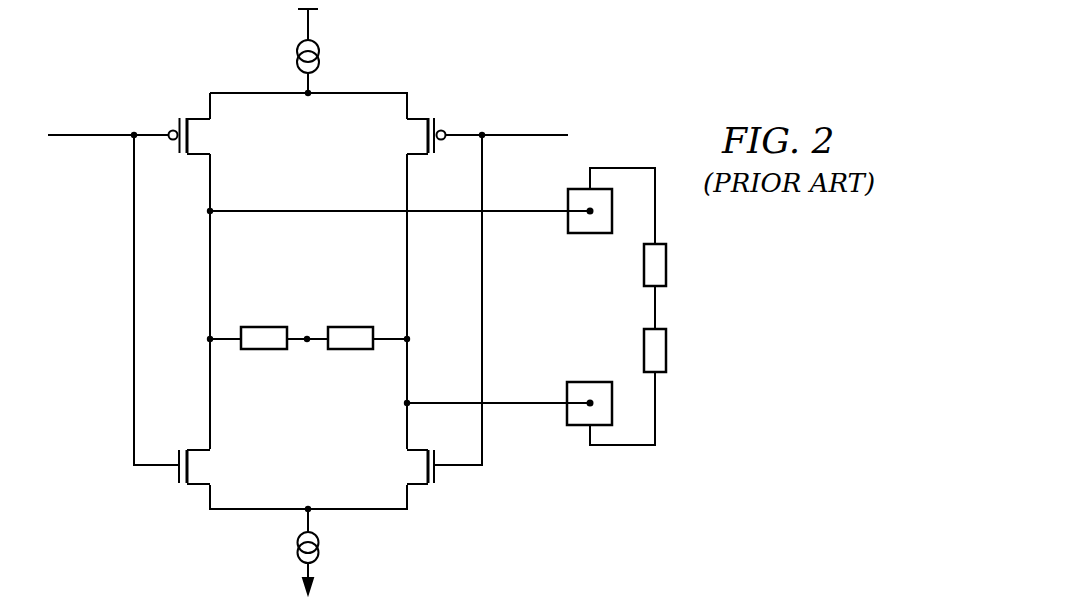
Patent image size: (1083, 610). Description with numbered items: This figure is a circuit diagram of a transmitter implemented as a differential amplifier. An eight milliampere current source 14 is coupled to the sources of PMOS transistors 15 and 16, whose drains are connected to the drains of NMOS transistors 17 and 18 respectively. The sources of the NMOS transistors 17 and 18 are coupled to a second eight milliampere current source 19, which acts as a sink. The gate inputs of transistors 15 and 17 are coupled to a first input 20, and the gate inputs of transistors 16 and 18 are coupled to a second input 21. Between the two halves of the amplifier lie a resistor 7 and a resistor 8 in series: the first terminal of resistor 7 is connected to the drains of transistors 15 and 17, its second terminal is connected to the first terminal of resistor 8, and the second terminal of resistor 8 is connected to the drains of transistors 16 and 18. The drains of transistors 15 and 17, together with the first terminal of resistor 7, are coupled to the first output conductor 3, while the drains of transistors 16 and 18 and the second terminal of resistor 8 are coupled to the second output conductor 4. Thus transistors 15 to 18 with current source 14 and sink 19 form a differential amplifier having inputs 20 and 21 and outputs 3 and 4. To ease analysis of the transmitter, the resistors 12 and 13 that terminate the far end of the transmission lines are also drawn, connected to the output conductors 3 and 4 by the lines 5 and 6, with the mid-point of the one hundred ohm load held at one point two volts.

The first output conductor 3 is at (524, 212).
The second output conductor 4 is at (523, 402).
The first connection line 5 is at (623, 168).
The second connection line 6 is at (622, 447).
The resistor 7 is at (262, 350).
The resistor 8 is at (350, 350).
The resistor 12 is at (668, 265).
The resistor 13 is at (668, 350).
The current source 14 is at (296, 50).
The PMOS transistor 15 is at (172, 128).
The PMOS transistor 16 is at (446, 127).
The NMOS transistor 17 is at (178, 475).
The NMOS transistor 18 is at (436, 477).
The current source 19 is at (296, 553).
The first input 20 is at (90, 133).
The second input 21 is at (526, 133).